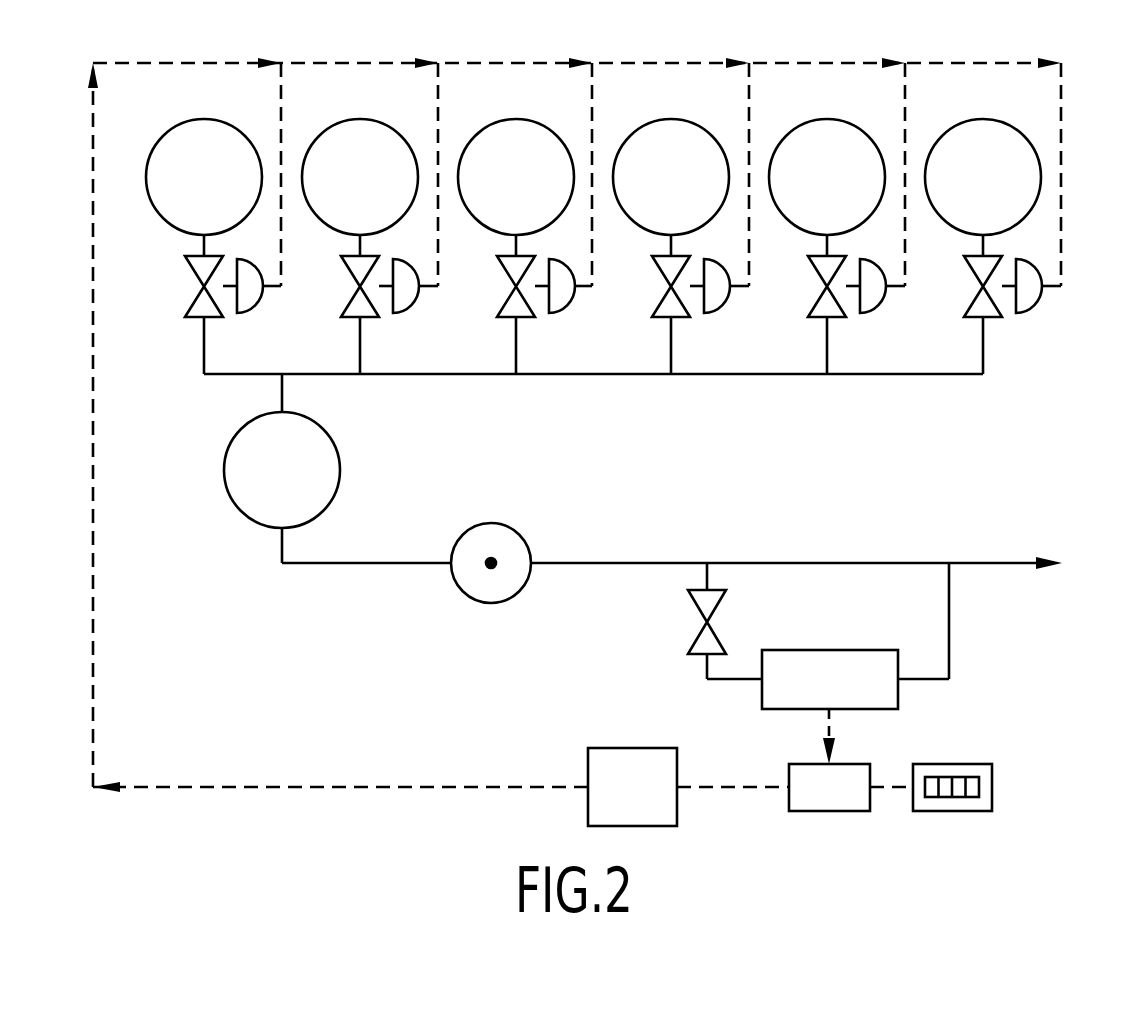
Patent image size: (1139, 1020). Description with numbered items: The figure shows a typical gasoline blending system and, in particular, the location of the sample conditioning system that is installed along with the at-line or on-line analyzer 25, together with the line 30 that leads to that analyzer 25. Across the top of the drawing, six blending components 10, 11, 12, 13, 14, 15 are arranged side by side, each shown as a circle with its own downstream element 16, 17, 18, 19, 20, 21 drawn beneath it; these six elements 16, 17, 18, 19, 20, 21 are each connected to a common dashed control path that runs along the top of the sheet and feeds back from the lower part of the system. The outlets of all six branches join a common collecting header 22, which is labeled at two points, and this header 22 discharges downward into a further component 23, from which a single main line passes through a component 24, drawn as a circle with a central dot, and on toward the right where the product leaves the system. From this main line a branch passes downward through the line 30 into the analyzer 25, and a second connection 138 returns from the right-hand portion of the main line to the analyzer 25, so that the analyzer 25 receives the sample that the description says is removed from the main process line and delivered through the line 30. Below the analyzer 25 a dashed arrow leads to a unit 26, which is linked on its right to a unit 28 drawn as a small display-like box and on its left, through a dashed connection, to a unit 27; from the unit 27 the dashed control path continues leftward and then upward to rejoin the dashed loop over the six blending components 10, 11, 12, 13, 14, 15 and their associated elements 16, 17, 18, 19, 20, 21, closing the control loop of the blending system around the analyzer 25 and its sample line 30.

The mixing tank 10 is at (218, 193).
The mixing tank 11 is at (374, 193).
The mixing tank 12 is at (530, 193).
The mixing tank 13 is at (685, 193).
The mixing tank 14 is at (841, 193).
The mixing tank 15 is at (997, 193).
The control valve 16 is at (254, 306).
The control valve 17 is at (410, 306).
The control valve 18 is at (566, 306).
The control valve 19 is at (721, 306).
The sample supply means 20 is at (877, 306).
The control valve 21 is at (1033, 306).
The manifold line 22 is at (441, 374).
The mixing vessel 23 is at (296, 486).
The pump 24 is at (491, 523).
The analyzer 25 is at (844, 694).
The controller 26 is at (844, 803).
The control unit 27 is at (647, 803).
The display 28 is at (992, 787).
The line 30 is at (707, 666).
The sample line 138 is at (949, 620).